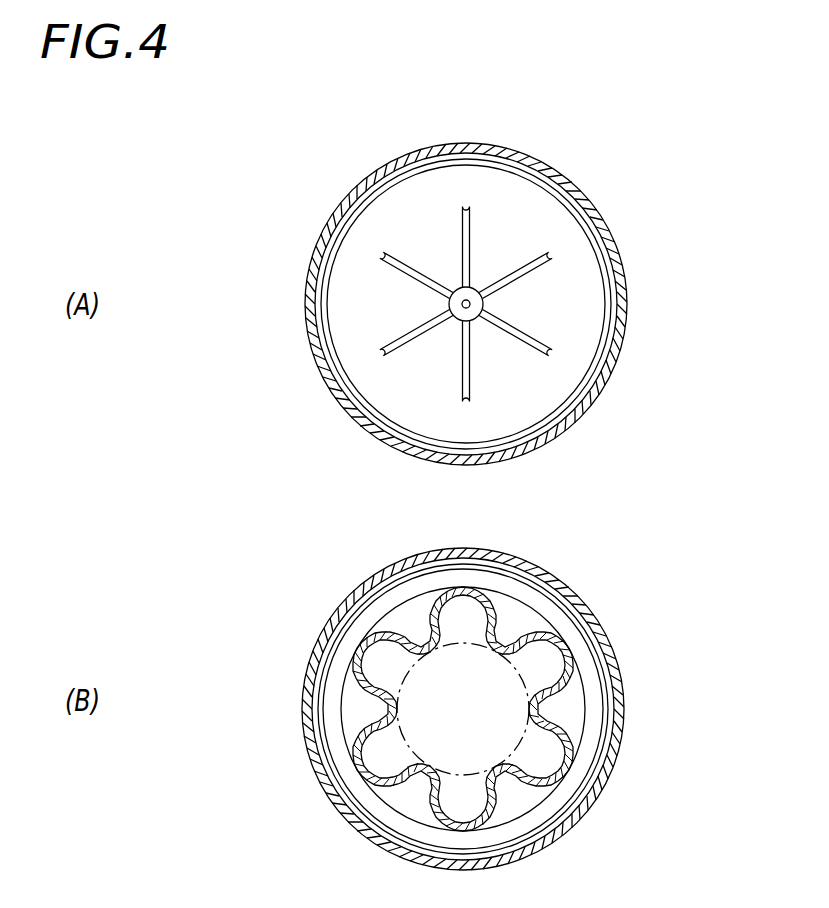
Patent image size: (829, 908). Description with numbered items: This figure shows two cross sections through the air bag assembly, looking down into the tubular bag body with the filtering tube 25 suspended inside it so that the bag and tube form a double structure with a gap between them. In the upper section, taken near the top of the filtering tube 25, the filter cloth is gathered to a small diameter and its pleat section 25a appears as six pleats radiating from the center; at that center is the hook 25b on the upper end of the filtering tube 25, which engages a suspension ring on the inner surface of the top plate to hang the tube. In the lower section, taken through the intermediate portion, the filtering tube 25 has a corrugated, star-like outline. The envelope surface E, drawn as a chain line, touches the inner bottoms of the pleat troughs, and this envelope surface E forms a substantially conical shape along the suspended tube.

The filtering tube 25 is at (393, 703).
The pleat section 25a is at (380, 252).
The hook 25b is at (462, 304).
The envelope surface E is at (362, 770).